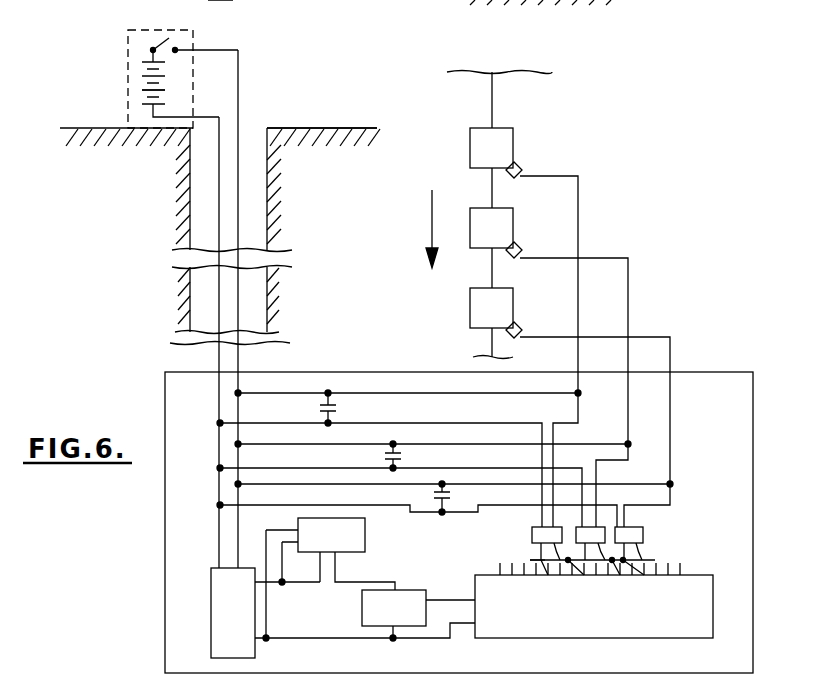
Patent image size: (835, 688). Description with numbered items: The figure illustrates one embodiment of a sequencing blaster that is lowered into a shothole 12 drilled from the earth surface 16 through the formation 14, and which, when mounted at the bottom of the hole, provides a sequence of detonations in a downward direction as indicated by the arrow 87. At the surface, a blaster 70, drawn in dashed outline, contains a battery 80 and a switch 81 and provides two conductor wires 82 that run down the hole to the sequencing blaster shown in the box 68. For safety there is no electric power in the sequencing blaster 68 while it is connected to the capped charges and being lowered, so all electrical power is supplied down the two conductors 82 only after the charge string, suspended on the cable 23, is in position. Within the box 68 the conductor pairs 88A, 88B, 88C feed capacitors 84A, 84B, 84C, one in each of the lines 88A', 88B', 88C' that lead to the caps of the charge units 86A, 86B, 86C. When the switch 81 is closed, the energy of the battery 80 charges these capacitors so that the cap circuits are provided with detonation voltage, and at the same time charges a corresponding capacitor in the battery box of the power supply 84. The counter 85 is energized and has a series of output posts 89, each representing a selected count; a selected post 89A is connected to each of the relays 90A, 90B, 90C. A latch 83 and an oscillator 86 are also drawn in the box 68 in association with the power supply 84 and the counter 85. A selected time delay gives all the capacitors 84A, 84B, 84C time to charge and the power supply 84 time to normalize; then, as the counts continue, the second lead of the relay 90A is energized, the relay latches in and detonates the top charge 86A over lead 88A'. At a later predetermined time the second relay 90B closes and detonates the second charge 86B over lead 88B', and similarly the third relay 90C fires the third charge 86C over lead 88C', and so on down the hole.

The switch 81 is at (164, 36).
The blaster 70 is at (130, 74).
The battery 80 is at (143, 93).
The earth surface 16 is at (305, 128).
The earth formation 14 is at (104, 232).
The borehole 12 is at (268, 195).
The conductor wires 82 is at (233, 182).
The cable 23 is at (493, 100).
The charge unit 86A is at (514, 136).
The charge unit 86B is at (514, 229).
The charge unit 86C is at (514, 308).
The lead 88A' is at (577, 277).
The lead 88B' is at (601, 350).
The lead 88C' is at (618, 402).
The arrow 87 is at (432, 200).
The sequencing blaster 68 is at (160, 380).
The conductor pair 88A is at (372, 458).
The conductor pair 88B is at (397, 484).
The conductor pair 88C is at (418, 504).
The capacitor 84A is at (330, 400).
The capacitor 84B is at (394, 443).
The capacitor 84C is at (443, 483).
The relay 90A is at (532, 533).
The relay 90B is at (600, 527).
The relay 90C is at (643, 531).
The output posts 89 is at (668, 562).
The selected post 89A is at (530, 560).
The counter 85 is at (695, 575).
The latch 83 is at (365, 535).
The oscillator 86 is at (362, 606).
The power supply 84 is at (211, 607).